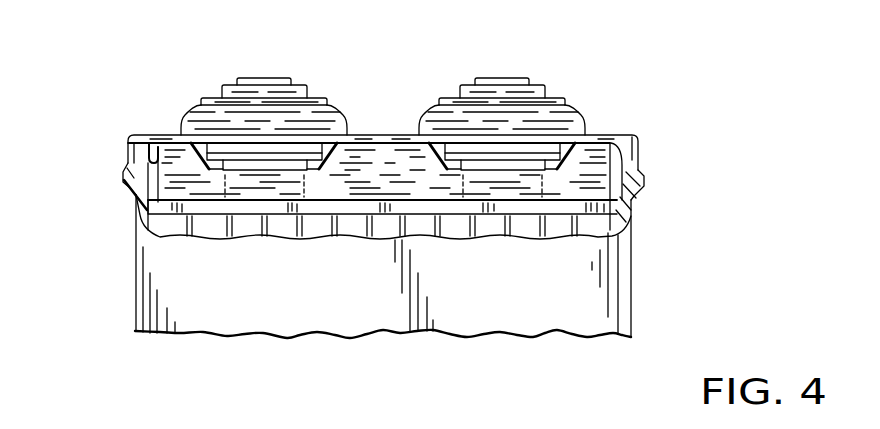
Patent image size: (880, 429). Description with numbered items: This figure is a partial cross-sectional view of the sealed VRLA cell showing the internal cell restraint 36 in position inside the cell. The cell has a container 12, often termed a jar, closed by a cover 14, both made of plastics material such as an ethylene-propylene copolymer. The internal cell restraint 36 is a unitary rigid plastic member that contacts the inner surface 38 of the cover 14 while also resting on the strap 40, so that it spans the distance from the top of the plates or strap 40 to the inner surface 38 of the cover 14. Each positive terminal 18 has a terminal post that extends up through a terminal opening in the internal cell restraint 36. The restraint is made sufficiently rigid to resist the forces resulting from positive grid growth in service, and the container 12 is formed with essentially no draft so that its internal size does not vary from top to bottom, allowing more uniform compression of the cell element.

The container 12 is at (318, 299).
The cover 14 is at (375, 135).
The positive terminal 18 is at (257, 78).
The internal cell restraint 36 is at (158, 188).
The inner surface 38 is at (146, 154).
The strap 40 is at (168, 208).